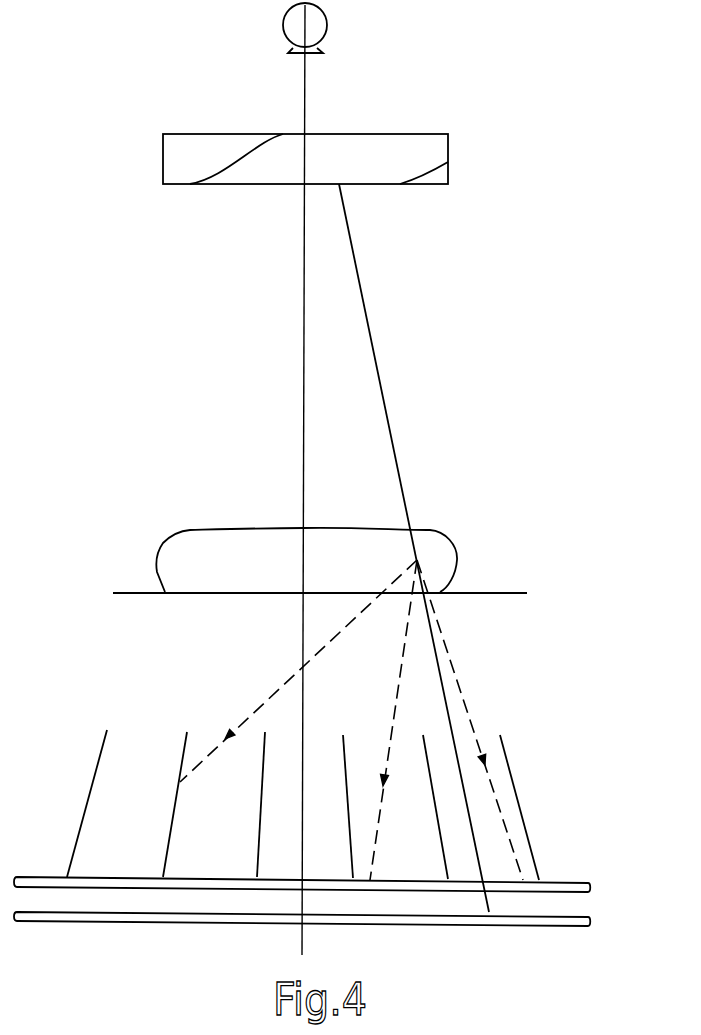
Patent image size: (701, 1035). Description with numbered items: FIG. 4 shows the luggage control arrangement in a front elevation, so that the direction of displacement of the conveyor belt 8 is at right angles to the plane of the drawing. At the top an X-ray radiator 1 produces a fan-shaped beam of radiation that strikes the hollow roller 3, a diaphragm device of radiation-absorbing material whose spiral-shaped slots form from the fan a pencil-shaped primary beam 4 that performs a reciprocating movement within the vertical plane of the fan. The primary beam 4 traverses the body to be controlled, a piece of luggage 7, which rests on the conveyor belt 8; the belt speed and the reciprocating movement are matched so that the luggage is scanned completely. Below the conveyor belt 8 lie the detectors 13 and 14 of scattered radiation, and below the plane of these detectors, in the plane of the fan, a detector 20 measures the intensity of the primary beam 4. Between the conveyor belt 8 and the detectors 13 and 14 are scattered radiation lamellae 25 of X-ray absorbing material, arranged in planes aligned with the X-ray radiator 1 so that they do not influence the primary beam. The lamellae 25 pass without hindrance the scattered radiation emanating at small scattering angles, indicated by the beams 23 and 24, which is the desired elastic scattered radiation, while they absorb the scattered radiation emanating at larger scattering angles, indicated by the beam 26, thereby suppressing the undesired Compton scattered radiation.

The X-ray radiator 1 is at (320, 31).
The hollow roller 3 is at (420, 147).
The primary beam 4 is at (388, 425).
The piece of luggage 7 is at (432, 530).
The conveyor belt 8 is at (518, 593).
The detector of scattered radiation 13 is at (331, 873).
The detector of scattered radiation 14 is at (302, 919).
The detector 20 is at (469, 929).
The beam 23 is at (447, 648).
The beam 24 is at (402, 677).
The scattered radiation lamellae 25 is at (167, 830).
The beam 26 is at (282, 680).